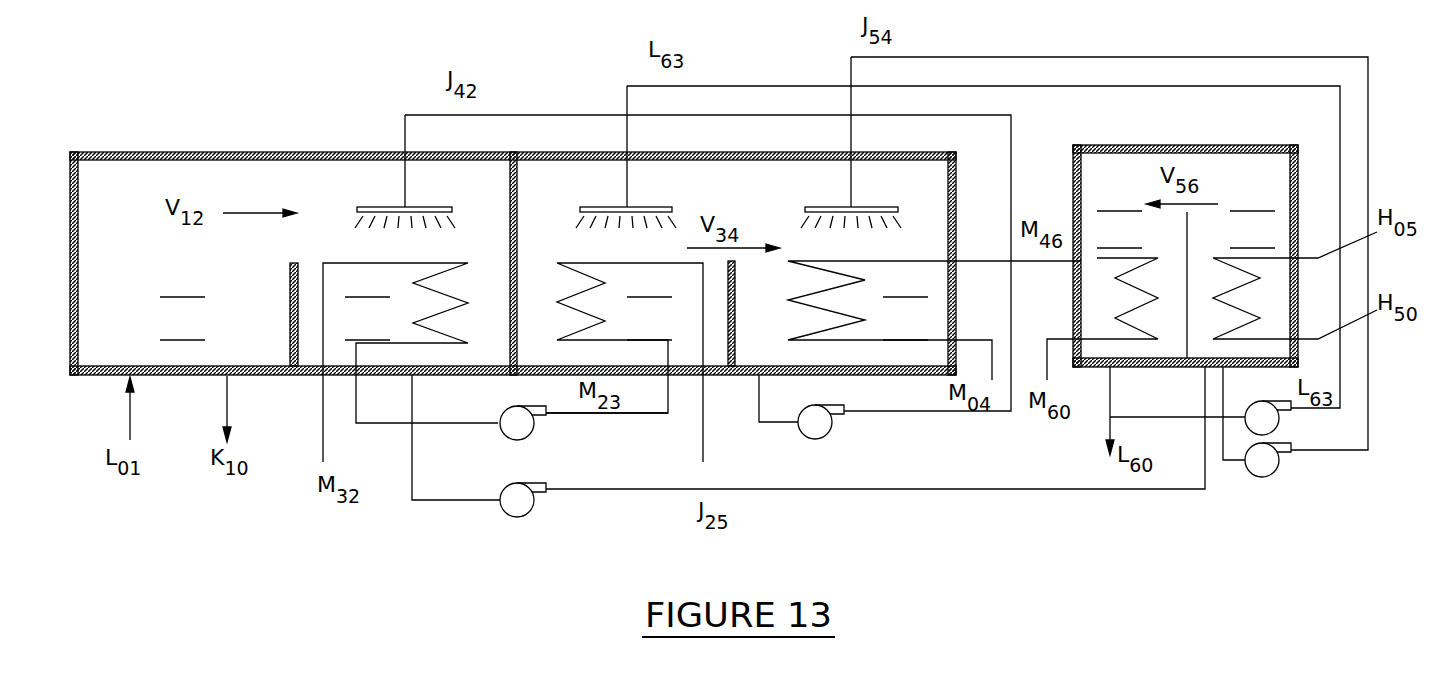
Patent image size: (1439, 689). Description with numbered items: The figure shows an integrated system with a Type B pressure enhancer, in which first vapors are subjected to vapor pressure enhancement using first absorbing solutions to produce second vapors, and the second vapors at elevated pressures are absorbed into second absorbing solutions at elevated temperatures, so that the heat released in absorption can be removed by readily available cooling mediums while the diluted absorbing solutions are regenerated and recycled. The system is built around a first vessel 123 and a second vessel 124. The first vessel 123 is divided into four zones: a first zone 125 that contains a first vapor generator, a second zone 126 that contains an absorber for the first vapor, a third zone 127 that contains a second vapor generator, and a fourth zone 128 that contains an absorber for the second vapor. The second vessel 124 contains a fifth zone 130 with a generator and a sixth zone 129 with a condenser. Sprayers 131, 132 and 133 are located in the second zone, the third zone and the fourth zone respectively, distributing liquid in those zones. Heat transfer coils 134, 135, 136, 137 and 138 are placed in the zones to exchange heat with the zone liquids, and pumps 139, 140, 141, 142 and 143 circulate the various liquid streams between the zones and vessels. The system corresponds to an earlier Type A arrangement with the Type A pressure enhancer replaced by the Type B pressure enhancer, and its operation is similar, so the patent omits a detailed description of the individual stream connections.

The first vessel 123 is at (136, 148).
The second vessel 124 is at (1152, 142).
The first zone 125 is at (183, 306).
The second zone 126 is at (368, 306).
The third zone 127 is at (650, 306).
The fourth zone 128 is at (906, 306).
The sixth zone 129 is at (1120, 217).
The fifth zone 130 is at (1253, 217).
The sprayer 131 is at (405, 171).
The sprayer 132 is at (627, 157).
The sprayer 133 is at (851, 142).
The heat transfer coil 134 is at (452, 276).
The heat transfer coil 135 is at (572, 272).
The heat transfer coil 136 is at (805, 273).
The heat transfer coil 137 is at (1138, 293).
The heat transfer coil 138 is at (1232, 292).
The pump 139 is at (535, 437).
The pump 140 is at (535, 515).
The pump 141 is at (1290, 471).
The pump 142 is at (835, 437).
The pump 143 is at (1295, 426).